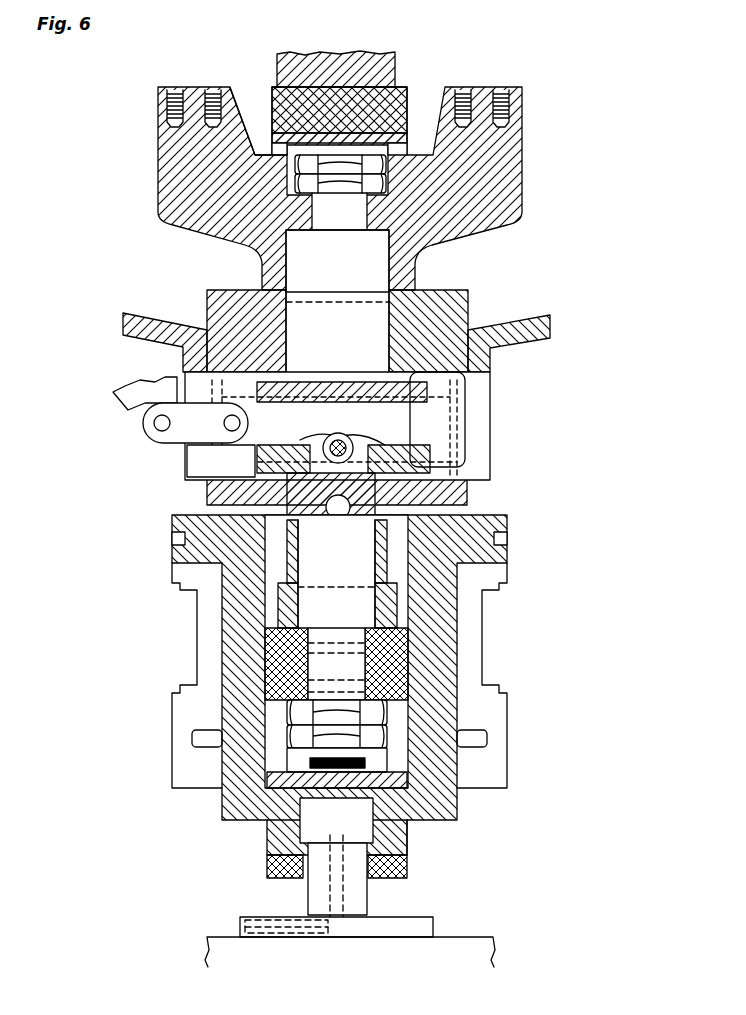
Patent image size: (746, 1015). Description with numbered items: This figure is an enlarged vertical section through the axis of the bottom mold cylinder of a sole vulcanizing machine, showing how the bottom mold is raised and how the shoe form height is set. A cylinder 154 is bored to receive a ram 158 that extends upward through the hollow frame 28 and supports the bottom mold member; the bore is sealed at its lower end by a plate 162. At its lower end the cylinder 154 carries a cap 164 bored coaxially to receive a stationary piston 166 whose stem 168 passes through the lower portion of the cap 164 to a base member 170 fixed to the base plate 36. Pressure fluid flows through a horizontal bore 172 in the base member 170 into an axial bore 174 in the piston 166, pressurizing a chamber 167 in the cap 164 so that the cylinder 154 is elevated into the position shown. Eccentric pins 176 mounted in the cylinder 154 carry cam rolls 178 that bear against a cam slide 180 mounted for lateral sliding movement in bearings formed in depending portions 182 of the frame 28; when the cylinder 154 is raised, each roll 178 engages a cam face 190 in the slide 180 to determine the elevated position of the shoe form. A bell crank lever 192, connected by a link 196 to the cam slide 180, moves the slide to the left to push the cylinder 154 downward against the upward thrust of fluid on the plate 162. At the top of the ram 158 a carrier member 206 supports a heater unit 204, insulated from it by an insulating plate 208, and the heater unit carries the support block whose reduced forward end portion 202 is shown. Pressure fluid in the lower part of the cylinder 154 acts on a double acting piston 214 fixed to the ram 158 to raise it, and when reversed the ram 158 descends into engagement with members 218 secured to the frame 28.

The hollow frame 28 is at (183, 330).
The base plate 36 is at (447, 940).
The cylinder 154 is at (230, 622).
The ram 158 is at (377, 277).
The plate 162 is at (413, 773).
The cap 164 is at (407, 840).
The stationary piston 166 is at (312, 837).
The chamber 167 is at (303, 817).
The stem 168 is at (367, 897).
The base member 170 is at (423, 915).
The horizontal bore 172 is at (240, 923).
The axial bore 174 is at (332, 898).
The eccentric pin 176 is at (335, 445).
The cam roll 178 is at (336, 438).
The cam slide 180 is at (450, 423).
The depending portions 182 is at (463, 462).
The cam face 190 is at (367, 442).
The bell crank lever 192 is at (123, 397).
The link 196 is at (193, 430).
The reduced forward end portion of support block 202 is at (388, 65).
The heater unit 204 is at (272, 112).
The carrier member 206 is at (517, 163).
The insulating plate 208 is at (407, 130).
The double acting piston 214 is at (418, 672).
The members 218 is at (390, 330).